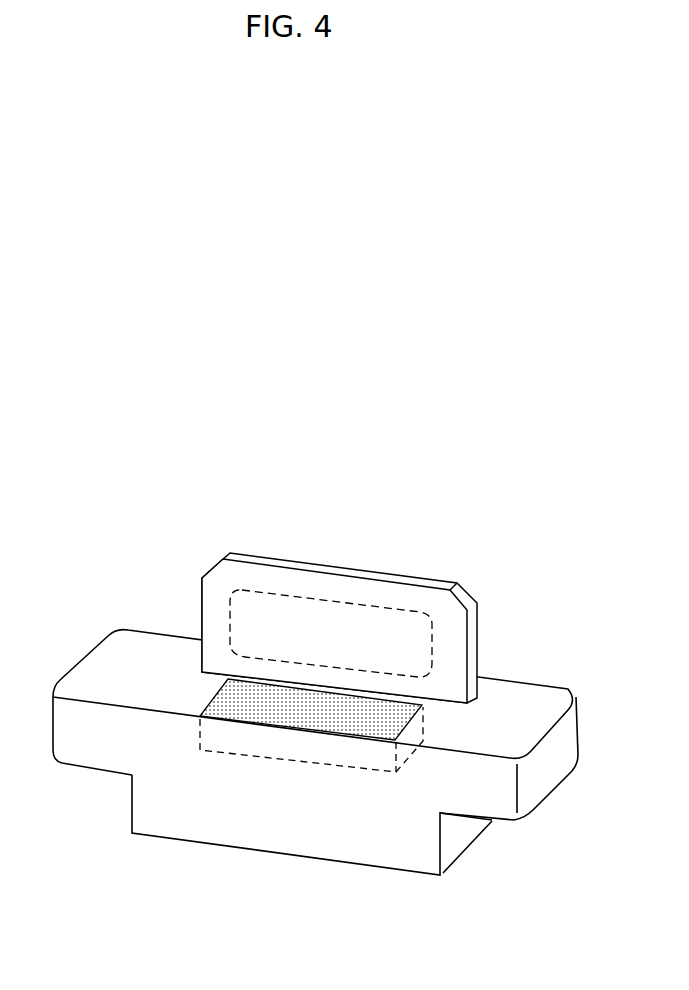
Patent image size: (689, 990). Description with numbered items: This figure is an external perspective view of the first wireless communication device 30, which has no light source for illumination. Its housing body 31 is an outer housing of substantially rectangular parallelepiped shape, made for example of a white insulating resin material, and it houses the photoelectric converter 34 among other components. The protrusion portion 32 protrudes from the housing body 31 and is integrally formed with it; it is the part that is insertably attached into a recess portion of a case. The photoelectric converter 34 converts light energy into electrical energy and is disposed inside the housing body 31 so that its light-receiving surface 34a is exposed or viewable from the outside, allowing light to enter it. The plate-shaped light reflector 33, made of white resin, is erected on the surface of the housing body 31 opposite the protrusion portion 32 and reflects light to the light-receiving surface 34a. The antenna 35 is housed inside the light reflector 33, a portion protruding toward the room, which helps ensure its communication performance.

The first wireless communication device 30 is at (535, 513).
The housing body 31 is at (58, 656).
The protrusion portion 32 is at (373, 850).
The light reflector 33 is at (333, 588).
The photoelectric converter 34 is at (258, 755).
The light-receiving surface 34a is at (258, 703).
The antenna 35 is at (272, 589).